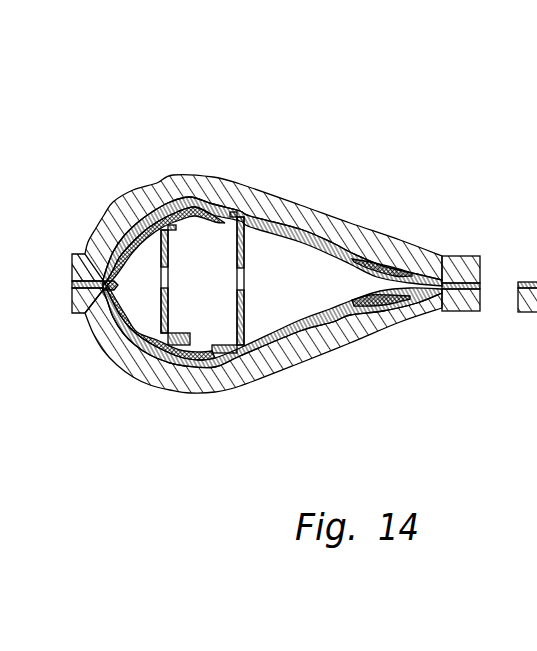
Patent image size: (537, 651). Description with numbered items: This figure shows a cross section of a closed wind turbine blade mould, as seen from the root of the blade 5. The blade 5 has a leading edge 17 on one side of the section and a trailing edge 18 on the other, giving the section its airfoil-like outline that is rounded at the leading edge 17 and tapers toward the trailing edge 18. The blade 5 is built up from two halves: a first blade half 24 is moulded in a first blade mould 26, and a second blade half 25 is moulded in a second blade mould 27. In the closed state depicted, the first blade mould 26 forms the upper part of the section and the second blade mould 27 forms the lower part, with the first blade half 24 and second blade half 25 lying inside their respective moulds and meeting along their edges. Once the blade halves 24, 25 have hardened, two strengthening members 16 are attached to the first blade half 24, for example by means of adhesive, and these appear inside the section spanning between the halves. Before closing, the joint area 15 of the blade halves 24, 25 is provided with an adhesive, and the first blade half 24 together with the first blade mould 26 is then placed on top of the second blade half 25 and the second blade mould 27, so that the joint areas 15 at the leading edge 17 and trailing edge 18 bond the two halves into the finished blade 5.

The wind turbine blade 5 is at (129, 122).
The joint area 15 is at (85, 254).
The strengthening members 16 is at (170, 256).
The leading edge 17 is at (86, 312).
The trailing edge 18 is at (445, 288).
The first blade half 24 is at (190, 206).
The second blade half 25 is at (148, 344).
The first blade mould 26 is at (287, 210).
The second blade mould 27 is at (380, 333).